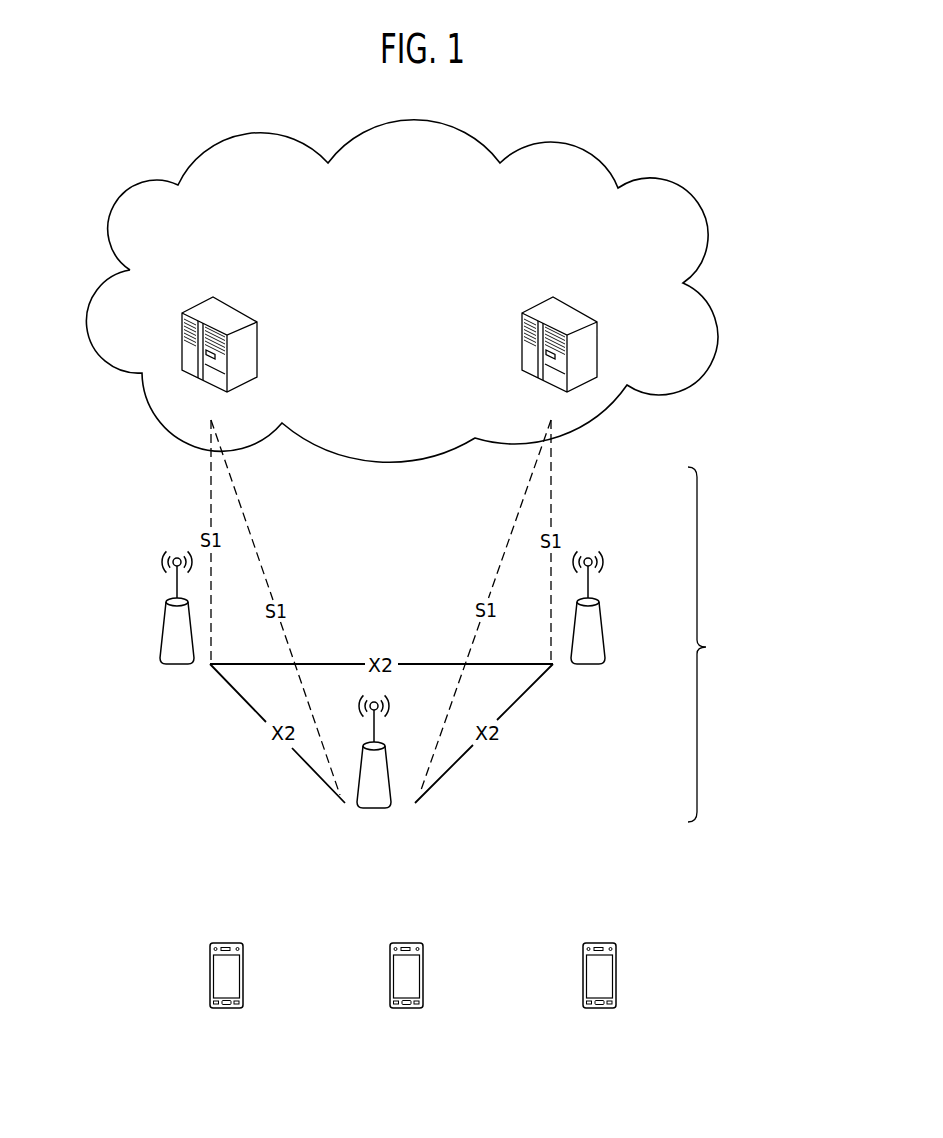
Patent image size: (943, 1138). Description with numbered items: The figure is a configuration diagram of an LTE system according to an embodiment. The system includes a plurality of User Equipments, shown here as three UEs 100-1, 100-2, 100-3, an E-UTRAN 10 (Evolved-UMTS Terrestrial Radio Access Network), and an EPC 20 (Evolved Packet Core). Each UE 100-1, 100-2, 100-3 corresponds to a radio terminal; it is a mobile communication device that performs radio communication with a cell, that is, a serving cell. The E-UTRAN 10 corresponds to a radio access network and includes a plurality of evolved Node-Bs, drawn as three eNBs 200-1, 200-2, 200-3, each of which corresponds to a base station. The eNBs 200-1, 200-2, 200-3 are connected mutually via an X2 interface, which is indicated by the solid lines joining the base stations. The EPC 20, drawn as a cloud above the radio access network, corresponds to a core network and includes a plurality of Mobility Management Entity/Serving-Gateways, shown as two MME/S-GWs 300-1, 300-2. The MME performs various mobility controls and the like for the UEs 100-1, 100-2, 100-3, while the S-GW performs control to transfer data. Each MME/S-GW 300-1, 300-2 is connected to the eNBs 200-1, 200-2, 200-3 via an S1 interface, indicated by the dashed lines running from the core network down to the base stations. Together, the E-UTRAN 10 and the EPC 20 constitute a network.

The E-UTRAN 10 is at (745, 644).
The EPC 20 is at (597, 158).
The UE 100-1 is at (262, 918).
The UE 100-2 is at (442, 918).
The UE 100-3 is at (635, 918).
The eNB 200-1 is at (160, 635).
The eNB 200-2 is at (391, 785).
The eNB 200-3 is at (601, 611).
The MME/S-GW 300-1 is at (243, 312).
The MME/S-GW 300-2 is at (571, 311).